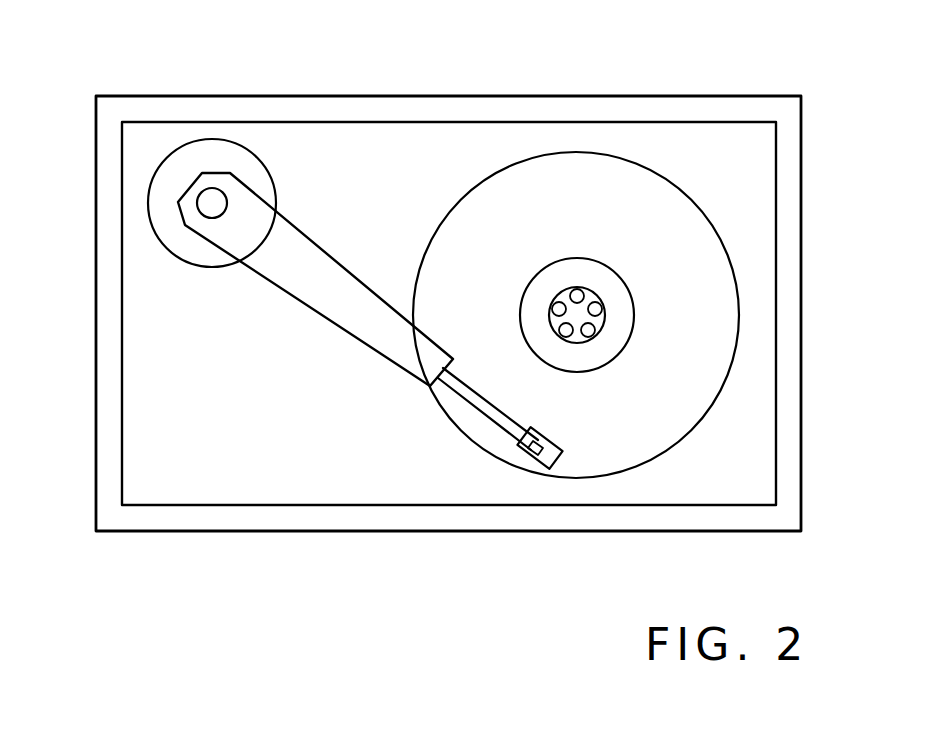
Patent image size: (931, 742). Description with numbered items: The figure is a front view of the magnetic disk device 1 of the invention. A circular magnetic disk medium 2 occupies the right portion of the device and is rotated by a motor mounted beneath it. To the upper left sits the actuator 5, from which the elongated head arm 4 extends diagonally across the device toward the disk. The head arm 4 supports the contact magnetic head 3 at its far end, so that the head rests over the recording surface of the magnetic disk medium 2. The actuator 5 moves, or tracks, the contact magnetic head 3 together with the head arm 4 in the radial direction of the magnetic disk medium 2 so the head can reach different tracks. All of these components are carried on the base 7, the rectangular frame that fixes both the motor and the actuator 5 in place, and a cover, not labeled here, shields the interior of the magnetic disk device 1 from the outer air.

The magnetic disk device 1 is at (467, 554).
The magnetic disk medium 2 is at (583, 175).
The contact magnetic head 3 is at (530, 455).
The head arm 4 is at (270, 282).
The actuator 5 is at (203, 155).
The base 7 is at (733, 518).